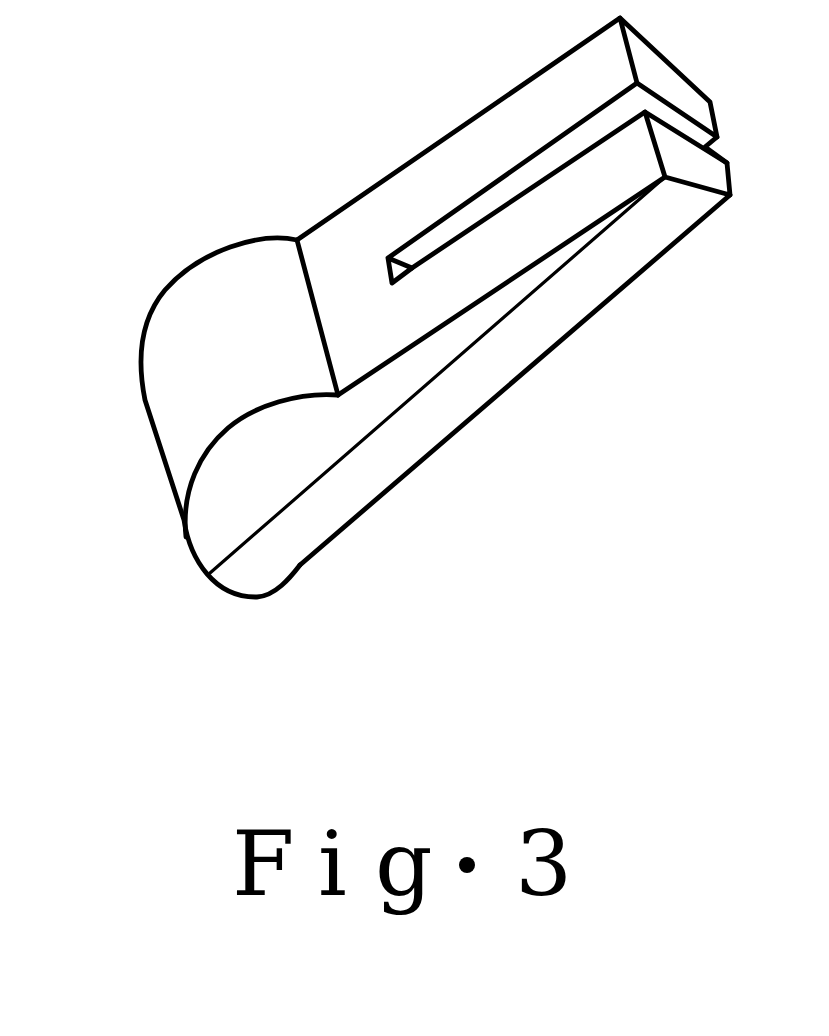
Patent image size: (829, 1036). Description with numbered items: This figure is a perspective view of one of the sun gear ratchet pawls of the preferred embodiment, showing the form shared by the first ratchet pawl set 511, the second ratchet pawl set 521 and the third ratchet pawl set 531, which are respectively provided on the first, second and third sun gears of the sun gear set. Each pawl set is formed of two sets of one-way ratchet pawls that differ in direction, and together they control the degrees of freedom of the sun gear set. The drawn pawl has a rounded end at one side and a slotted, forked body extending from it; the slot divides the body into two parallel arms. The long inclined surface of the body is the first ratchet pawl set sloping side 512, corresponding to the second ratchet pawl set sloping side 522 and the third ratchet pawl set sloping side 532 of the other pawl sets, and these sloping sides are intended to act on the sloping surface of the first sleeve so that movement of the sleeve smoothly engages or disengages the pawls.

The first ratchet pawl set 511 is at (377, 307).
The second ratchet pawl set 521 is at (434, 307).
The third ratchet pawl set 531 is at (200, 288).
The first ratchet pawl set sloping side 512 is at (497, 342).
The second ratchet pawl set sloping side 522 is at (470, 342).
The third ratchet pawl set sloping side 532 is at (608, 275).